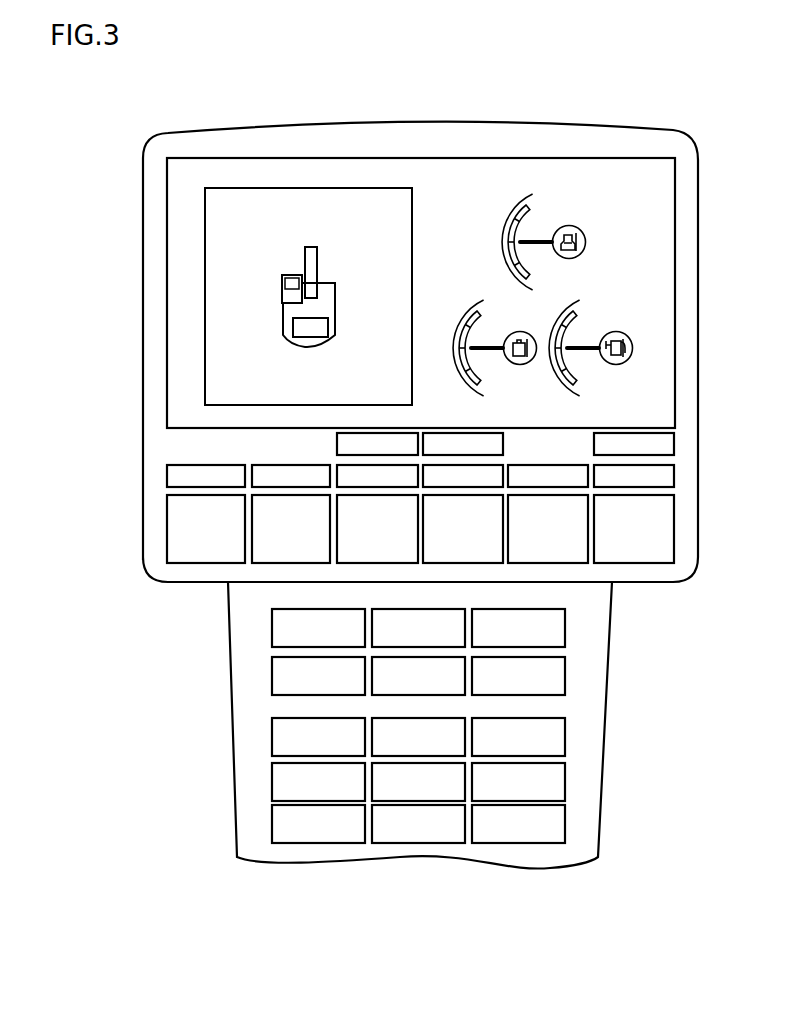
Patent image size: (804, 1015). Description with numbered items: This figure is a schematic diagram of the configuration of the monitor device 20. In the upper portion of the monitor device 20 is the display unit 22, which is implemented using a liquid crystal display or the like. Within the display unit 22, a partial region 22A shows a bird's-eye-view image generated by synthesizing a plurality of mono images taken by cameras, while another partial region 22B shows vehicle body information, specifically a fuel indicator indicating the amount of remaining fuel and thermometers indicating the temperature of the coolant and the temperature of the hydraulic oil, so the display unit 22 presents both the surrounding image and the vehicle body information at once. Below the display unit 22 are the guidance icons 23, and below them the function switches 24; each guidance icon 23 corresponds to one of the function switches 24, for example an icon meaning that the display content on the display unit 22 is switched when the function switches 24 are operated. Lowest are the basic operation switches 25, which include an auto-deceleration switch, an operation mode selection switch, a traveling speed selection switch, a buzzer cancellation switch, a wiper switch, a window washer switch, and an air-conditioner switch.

The monitor device 20 is at (677, 121).
The display unit 22 is at (570, 158).
The region 22A is at (343, 188).
The region 22B is at (568, 286).
The guidance icons 23 is at (678, 443).
The function switches 24 is at (678, 518).
The basic operation switches 25 is at (570, 676).